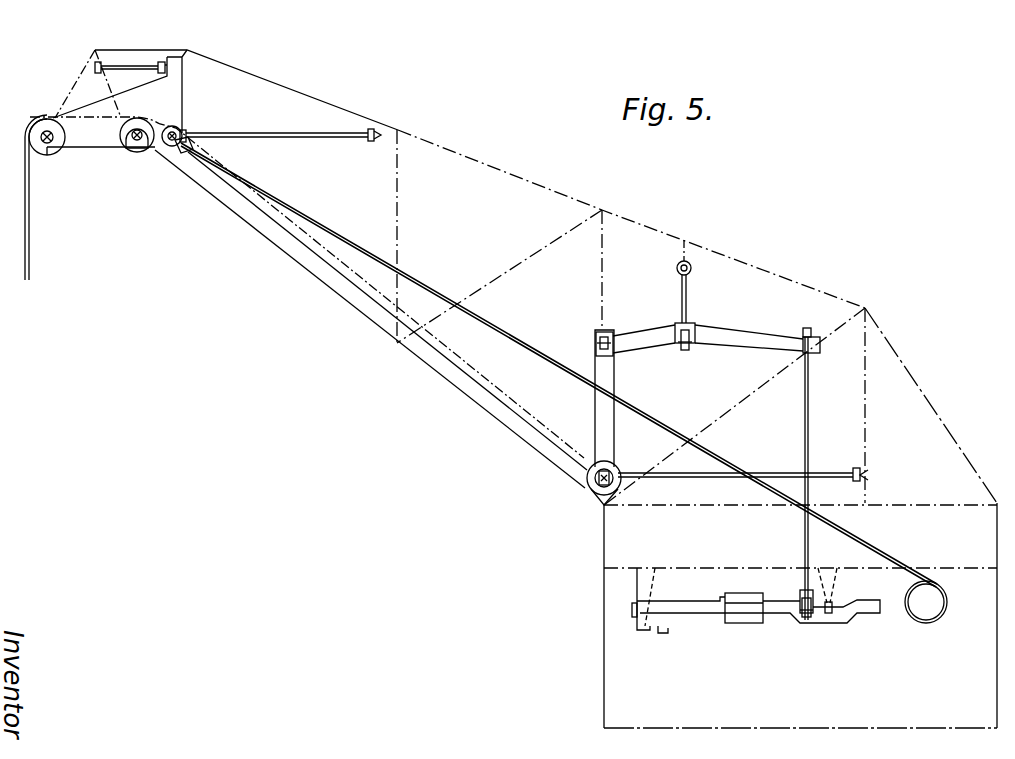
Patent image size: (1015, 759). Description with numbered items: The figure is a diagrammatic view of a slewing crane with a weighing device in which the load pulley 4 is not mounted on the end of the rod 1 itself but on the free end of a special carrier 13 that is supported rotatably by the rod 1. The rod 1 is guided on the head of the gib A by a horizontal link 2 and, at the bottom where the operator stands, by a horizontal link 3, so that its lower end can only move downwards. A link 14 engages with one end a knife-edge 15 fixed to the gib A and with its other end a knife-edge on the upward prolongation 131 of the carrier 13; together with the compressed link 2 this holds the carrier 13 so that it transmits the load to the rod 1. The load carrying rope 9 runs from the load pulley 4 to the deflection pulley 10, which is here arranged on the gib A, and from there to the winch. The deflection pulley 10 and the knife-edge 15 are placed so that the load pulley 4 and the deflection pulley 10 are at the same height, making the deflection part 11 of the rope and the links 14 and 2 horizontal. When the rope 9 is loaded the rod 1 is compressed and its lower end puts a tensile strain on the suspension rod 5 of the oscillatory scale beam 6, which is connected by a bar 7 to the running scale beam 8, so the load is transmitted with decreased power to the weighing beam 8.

The rod 1 is at (383, 303).
The horizontal link 2 is at (259, 136).
The horizontal link 3 is at (693, 478).
The load pulley 4 is at (52, 150).
The suspension rod 5 is at (609, 424).
The scale beam 6 is at (707, 340).
The bar 7 is at (809, 422).
The running scale beam 8 is at (700, 614).
The rope 9 is at (28, 240).
The deflection pulley 10 is at (136, 151).
The deflection part 11 is at (111, 115).
The carrier 13 is at (88, 144).
The link 14 is at (125, 67).
The knife-edge 15 is at (95, 69).
The upward prolongation 131 is at (180, 92).
The gib A is at (463, 158).